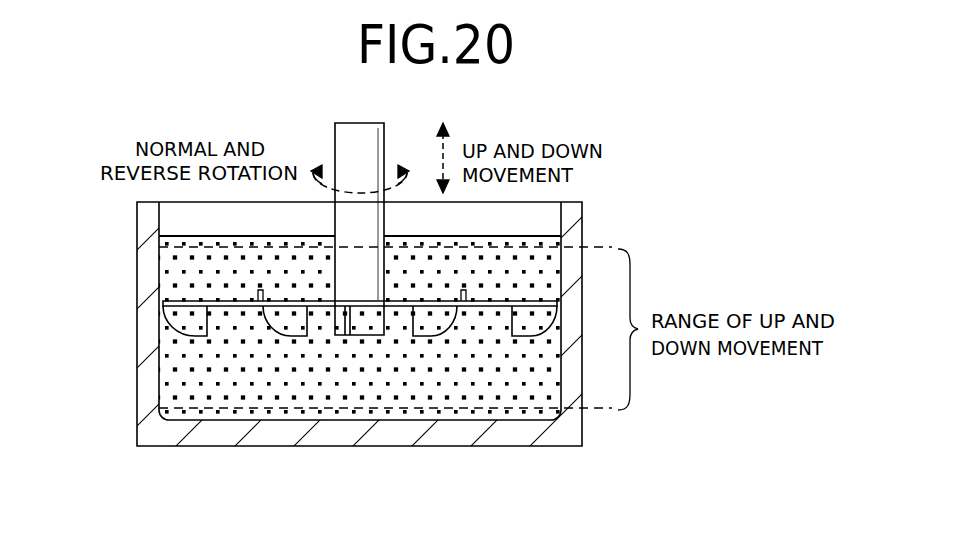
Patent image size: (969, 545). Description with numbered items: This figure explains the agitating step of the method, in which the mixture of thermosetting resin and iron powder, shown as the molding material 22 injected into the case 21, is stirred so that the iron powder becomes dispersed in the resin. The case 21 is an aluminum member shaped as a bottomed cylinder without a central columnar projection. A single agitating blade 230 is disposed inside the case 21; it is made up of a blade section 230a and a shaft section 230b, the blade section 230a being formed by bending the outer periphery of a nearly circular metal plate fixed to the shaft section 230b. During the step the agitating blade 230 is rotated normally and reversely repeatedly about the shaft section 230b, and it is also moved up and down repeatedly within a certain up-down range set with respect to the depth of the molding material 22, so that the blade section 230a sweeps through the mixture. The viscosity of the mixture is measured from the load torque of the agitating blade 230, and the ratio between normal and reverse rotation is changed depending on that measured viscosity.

The case 21 is at (563, 240).
The cleaning liquid (220,221) 22 is at (177, 366).
The agitating blade 230 is at (301, 356).
The blade section 230a is at (287, 327).
The shaft section 230b is at (366, 137).